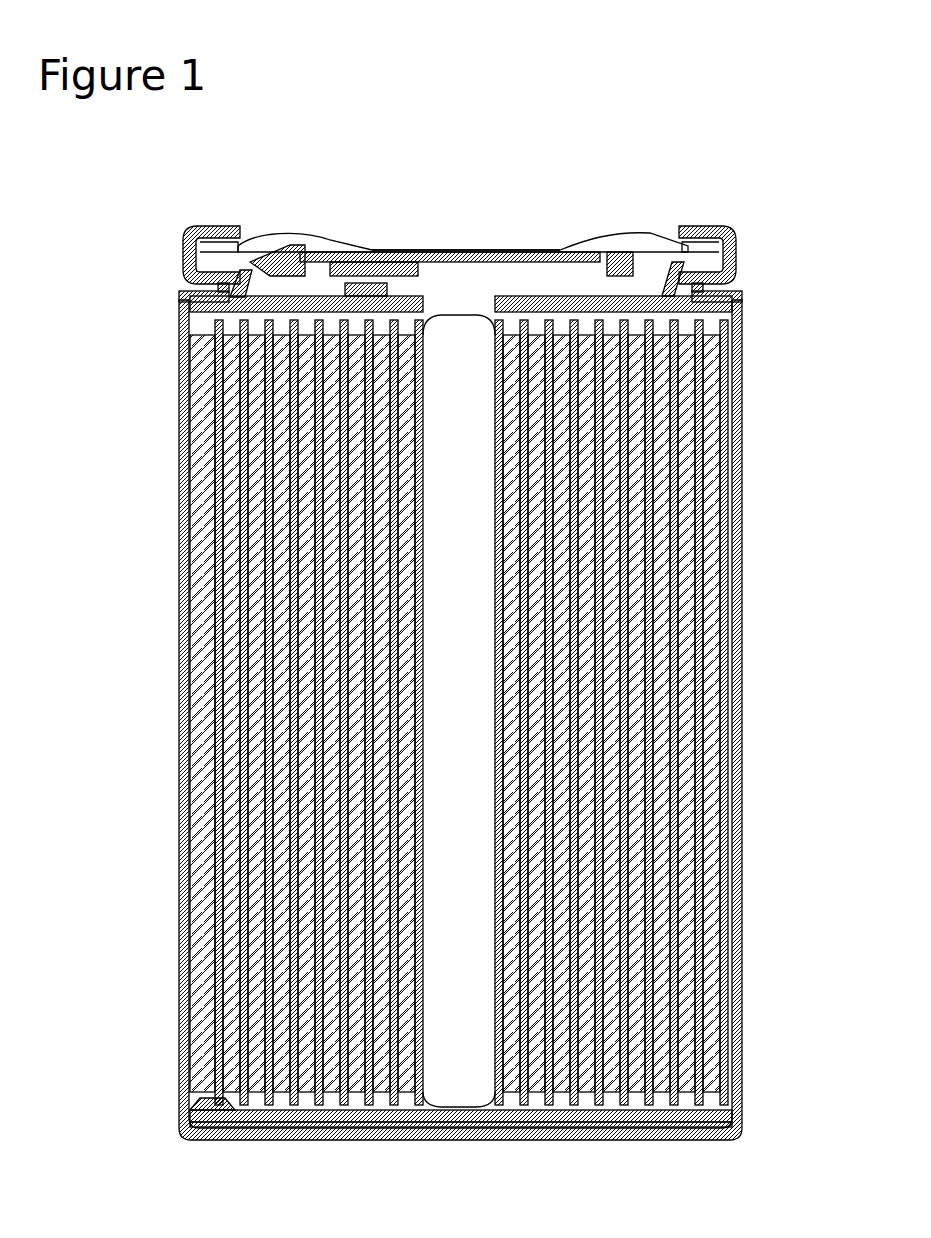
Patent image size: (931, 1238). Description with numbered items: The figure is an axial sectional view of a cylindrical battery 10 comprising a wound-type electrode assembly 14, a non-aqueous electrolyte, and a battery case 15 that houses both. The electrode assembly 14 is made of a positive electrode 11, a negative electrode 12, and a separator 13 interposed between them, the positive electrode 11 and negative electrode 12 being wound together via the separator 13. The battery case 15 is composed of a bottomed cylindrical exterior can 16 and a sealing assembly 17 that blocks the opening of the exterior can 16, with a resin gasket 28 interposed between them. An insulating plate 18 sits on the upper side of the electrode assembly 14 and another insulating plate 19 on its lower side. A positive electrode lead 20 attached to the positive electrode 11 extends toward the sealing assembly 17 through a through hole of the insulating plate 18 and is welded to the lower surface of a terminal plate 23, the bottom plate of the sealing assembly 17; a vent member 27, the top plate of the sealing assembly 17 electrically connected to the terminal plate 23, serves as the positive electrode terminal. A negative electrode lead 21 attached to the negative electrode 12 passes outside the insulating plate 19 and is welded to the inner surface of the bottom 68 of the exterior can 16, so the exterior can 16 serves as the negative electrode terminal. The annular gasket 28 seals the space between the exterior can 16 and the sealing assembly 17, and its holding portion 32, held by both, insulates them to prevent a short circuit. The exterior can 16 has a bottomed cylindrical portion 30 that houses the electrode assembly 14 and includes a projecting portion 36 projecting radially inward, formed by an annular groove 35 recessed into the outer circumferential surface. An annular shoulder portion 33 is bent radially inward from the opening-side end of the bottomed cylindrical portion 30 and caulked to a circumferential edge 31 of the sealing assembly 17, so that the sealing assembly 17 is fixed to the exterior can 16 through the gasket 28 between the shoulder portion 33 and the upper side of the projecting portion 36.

The cylindrical battery 10 is at (455, 233).
The positive electrode 11 is at (708, 680).
The negative electrode 12 is at (731, 711).
The separator 13 is at (702, 752).
The electrode assembly 14 is at (788, 668).
The battery case 15 is at (718, 176).
The exterior can 16 is at (697, 236).
The sealing assembly 17 is at (648, 240).
The insulating plate 18 is at (744, 306).
The insulating plate 19 is at (660, 1123).
The positive electrode lead 20 is at (398, 260).
The negative electrode lead 21 is at (188, 1122).
The terminal plate 23 is at (470, 256).
The vent member 27 is at (500, 248).
The gasket 28 is at (740, 239).
The bottomed cylindrical portion 30 is at (178, 428).
The circumferential edge 31 is at (228, 226).
The holding portion 32 is at (718, 231).
The shoulder portion 33 is at (215, 227).
The annular groove 35 is at (228, 288).
The projecting portion 36 is at (252, 250).
The bottom 68 is at (480, 1141).